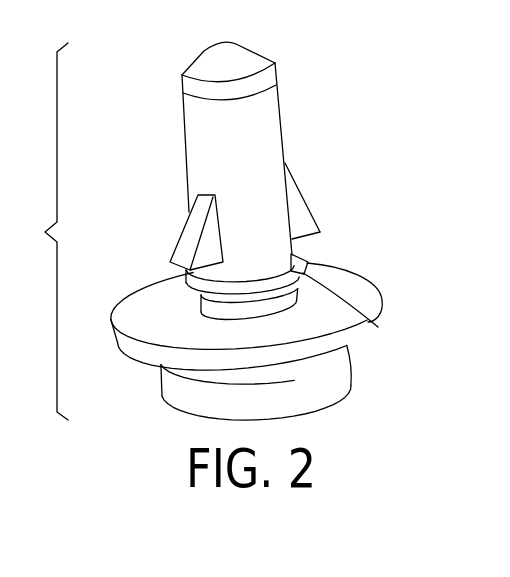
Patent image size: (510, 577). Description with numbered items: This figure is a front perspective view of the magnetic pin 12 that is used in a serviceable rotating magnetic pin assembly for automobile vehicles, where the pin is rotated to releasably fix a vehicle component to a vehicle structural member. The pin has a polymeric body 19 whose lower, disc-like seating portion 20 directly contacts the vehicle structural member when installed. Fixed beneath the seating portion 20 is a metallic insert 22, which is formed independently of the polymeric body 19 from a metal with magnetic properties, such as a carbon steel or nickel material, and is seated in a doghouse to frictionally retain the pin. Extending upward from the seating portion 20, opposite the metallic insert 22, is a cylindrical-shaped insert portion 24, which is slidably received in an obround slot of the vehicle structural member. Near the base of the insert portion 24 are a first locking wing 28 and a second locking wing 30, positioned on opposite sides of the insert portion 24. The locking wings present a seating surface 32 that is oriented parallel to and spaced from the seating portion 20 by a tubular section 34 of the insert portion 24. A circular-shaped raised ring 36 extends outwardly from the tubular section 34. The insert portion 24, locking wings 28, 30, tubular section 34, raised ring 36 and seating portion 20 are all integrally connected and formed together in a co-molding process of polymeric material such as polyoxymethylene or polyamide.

The magnetic pin 12 is at (310, 108).
The polymeric body 19 is at (43, 231).
The seating portion 20 is at (130, 315).
The metallic insert 22 is at (163, 400).
The cylindrical-shaped insert portion 24 is at (205, 118).
The first locking wing 28 is at (183, 240).
The second locking wing 30 is at (297, 210).
The seating surface 32 is at (320, 232).
The tubular section 34 is at (308, 262).
The circular-shaped raised ring 36 is at (376, 326).